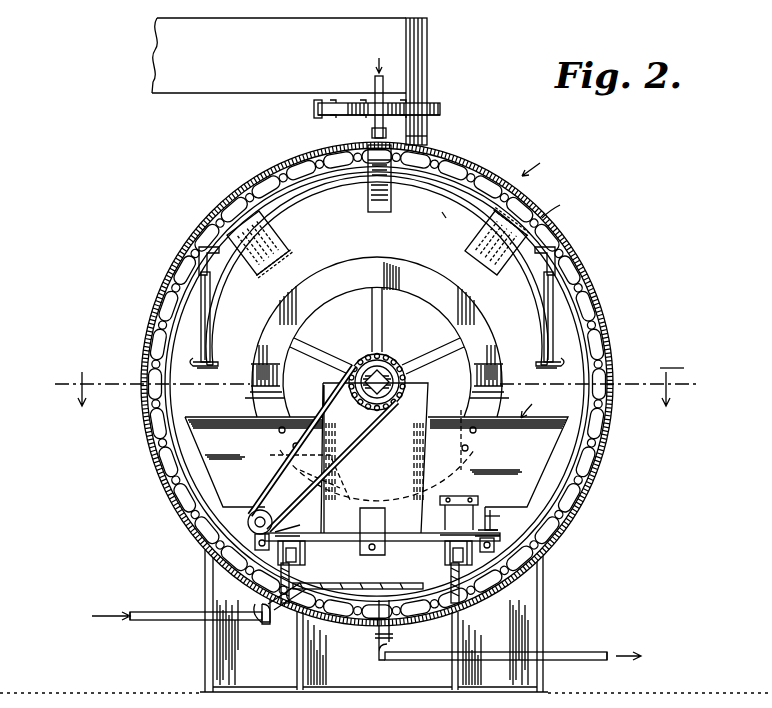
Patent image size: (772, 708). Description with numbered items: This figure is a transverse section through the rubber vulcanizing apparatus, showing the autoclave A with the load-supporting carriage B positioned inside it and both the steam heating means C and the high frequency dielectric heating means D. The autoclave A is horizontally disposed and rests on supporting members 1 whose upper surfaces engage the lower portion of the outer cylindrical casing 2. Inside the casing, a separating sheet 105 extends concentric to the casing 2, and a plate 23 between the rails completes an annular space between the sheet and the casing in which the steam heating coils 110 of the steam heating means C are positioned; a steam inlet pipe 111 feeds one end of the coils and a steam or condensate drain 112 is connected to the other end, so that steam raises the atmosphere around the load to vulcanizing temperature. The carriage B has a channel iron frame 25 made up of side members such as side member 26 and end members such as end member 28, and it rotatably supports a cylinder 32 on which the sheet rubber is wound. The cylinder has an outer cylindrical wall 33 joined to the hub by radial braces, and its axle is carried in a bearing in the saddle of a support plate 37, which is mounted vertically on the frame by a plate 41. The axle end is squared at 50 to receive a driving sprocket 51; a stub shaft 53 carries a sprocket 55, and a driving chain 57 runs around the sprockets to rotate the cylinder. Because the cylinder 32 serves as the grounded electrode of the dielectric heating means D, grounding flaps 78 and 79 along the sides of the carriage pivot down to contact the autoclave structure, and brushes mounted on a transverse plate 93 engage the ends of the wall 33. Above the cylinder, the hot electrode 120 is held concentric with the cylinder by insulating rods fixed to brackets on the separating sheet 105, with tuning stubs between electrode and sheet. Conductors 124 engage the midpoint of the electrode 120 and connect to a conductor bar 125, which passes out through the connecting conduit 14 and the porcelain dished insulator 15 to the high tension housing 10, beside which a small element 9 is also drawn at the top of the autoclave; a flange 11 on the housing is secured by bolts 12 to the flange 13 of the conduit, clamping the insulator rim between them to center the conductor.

The supporting members 1 is at (544, 600).
The outer cylindrical casing 2 is at (600, 478).
The carbon dioxide supply pipe 9 is at (374, 84).
The high tension housing 10 is at (428, 48).
The flange 11 is at (440, 104).
The bolts 12 is at (432, 103).
The flange 13 is at (441, 113).
The connecting conduit 14 is at (428, 136).
The porcelain dished insulator 15 is at (314, 110).
The plate 23 is at (378, 582).
The channel iron frame 25 is at (492, 504).
The side member 26 is at (500, 514).
The end member 28 is at (452, 496).
The cylinder 32 is at (401, 249).
The outer cylindrical wall 33 is at (302, 280).
The support plate 37 is at (428, 400).
The plate 41 is at (445, 468).
The squared end 50 is at (382, 366).
The driving sprocket 51 is at (370, 402).
The stub shaft 53 is at (248, 520).
The sprocket 55 is at (268, 490).
The driving chain 57 is at (300, 468).
The grounding flap 78 is at (252, 542).
The grounding flap 79 is at (497, 542).
The transverse plate 93 is at (545, 416).
The separating sheet 105 is at (388, 379).
The steam heating coils 110 is at (597, 405).
The steam inlet pipe 111 is at (178, 620).
The steam or condensate drain 112 is at (603, 651).
The electrode 120 is at (332, 221).
The conductors 124 is at (391, 196).
The conductor bar 125 is at (392, 172).
The autoclave A is at (537, 166).
The load-supporting carriage B is at (532, 407).
The steam heating means C is at (557, 207).
The high frequency dielectric heating means D is at (437, 207).